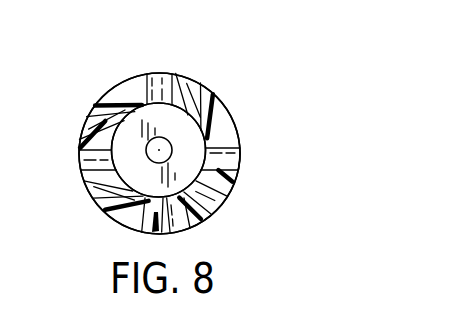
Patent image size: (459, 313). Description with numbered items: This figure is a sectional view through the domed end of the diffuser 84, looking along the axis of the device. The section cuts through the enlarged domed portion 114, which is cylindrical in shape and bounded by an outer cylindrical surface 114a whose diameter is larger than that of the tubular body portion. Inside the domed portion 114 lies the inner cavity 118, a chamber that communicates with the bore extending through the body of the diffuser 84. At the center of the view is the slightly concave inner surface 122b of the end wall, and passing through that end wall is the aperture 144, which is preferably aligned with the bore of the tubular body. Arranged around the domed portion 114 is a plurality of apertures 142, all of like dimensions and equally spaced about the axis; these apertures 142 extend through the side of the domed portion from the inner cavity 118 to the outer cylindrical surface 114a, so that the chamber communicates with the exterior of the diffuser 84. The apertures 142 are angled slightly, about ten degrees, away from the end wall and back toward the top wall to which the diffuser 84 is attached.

The diffuser 84 is at (204, 69).
The domed portion 114 is at (243, 135).
The outer cylindrical surface 114a is at (234, 183).
The inner cavity 118 is at (176, 120).
The inner surface 122b is at (132, 147).
The apertures 142 is at (158, 85).
The aperture 144 is at (158, 158).